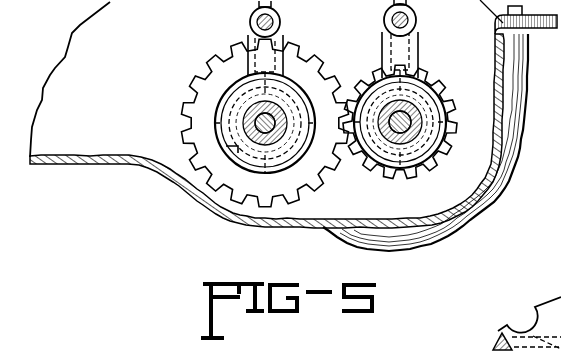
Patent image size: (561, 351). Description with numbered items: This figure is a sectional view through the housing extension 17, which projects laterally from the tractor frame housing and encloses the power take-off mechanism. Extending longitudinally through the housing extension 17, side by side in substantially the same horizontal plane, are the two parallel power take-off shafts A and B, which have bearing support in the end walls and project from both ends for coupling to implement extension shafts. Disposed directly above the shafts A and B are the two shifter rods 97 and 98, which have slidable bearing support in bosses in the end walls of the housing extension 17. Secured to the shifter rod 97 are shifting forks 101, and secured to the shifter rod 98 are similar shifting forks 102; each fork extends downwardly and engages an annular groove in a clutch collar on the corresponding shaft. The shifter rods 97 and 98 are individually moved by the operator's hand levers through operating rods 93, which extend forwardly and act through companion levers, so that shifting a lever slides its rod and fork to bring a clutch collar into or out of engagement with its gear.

The housing extension 17 is at (239, 226).
The shifter rod 97 is at (252, 19).
The shifter rod 98 is at (392, 17).
The shifting fork 101 is at (260, 57).
The shifting fork 102 is at (402, 50).
The power take-off shaft A is at (245, 140).
The power take-off shaft B is at (422, 145).
The operating rod 93 is at (473, 350).